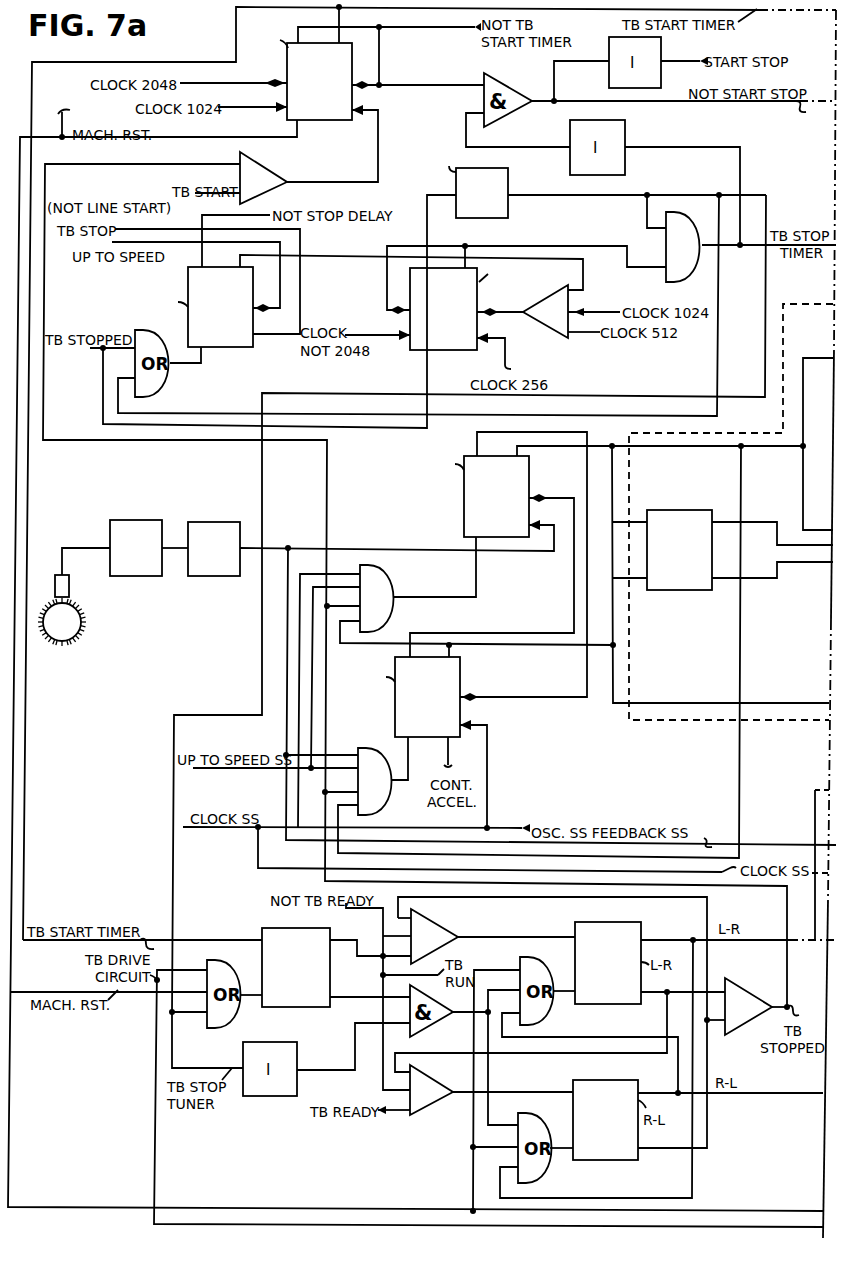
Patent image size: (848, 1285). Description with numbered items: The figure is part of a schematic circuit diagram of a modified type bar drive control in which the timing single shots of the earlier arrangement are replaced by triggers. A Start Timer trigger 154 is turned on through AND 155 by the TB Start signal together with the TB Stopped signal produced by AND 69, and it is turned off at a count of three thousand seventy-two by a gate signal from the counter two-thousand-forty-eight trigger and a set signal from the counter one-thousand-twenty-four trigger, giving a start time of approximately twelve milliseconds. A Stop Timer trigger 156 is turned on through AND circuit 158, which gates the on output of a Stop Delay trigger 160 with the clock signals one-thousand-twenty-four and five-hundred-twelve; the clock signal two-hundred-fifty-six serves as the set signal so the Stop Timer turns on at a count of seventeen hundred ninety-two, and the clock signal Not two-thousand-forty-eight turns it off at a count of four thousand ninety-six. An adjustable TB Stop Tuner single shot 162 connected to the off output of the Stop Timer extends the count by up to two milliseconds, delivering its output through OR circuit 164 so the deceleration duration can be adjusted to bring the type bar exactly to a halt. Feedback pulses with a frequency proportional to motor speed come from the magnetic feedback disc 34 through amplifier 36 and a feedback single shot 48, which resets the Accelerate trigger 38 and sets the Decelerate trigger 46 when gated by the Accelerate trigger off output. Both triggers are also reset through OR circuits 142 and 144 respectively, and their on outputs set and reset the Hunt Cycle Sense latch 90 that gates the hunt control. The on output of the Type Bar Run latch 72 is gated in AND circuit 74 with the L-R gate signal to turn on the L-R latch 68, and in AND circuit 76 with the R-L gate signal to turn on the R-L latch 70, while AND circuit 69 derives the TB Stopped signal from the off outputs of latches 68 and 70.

The Start Timer trigger 154 is at (318, 122).
The AND circuit 155 is at (268, 166).
The TB Stop Tuner single shot 162 is at (508, 212).
The OR circuit 164 is at (684, 282).
The Stop Delay trigger 160 is at (228, 349).
The Stop Timer trigger 156 is at (432, 352).
The AND circuit 158 is at (556, 336).
The Hunt Cycle Sense latch 90 is at (695, 592).
The Decelerate trigger 46 is at (464, 508).
The magnetic feedback disc 34 is at (76, 607).
The amplifier 36 is at (146, 577).
The feedback single shot 48 is at (223, 577).
The OR circuit 144 is at (383, 580).
The Accelerate trigger 38 is at (460, 675).
The OR circuit 142 is at (378, 755).
The Type Bar Run latch 72 is at (305, 1009).
The AND circuit 74 is at (438, 922).
The L-R latch 68 is at (636, 922).
The AND circuit 69 is at (748, 990).
The AND circuit 76 is at (424, 1080).
The R-L latch 70 is at (608, 1162).